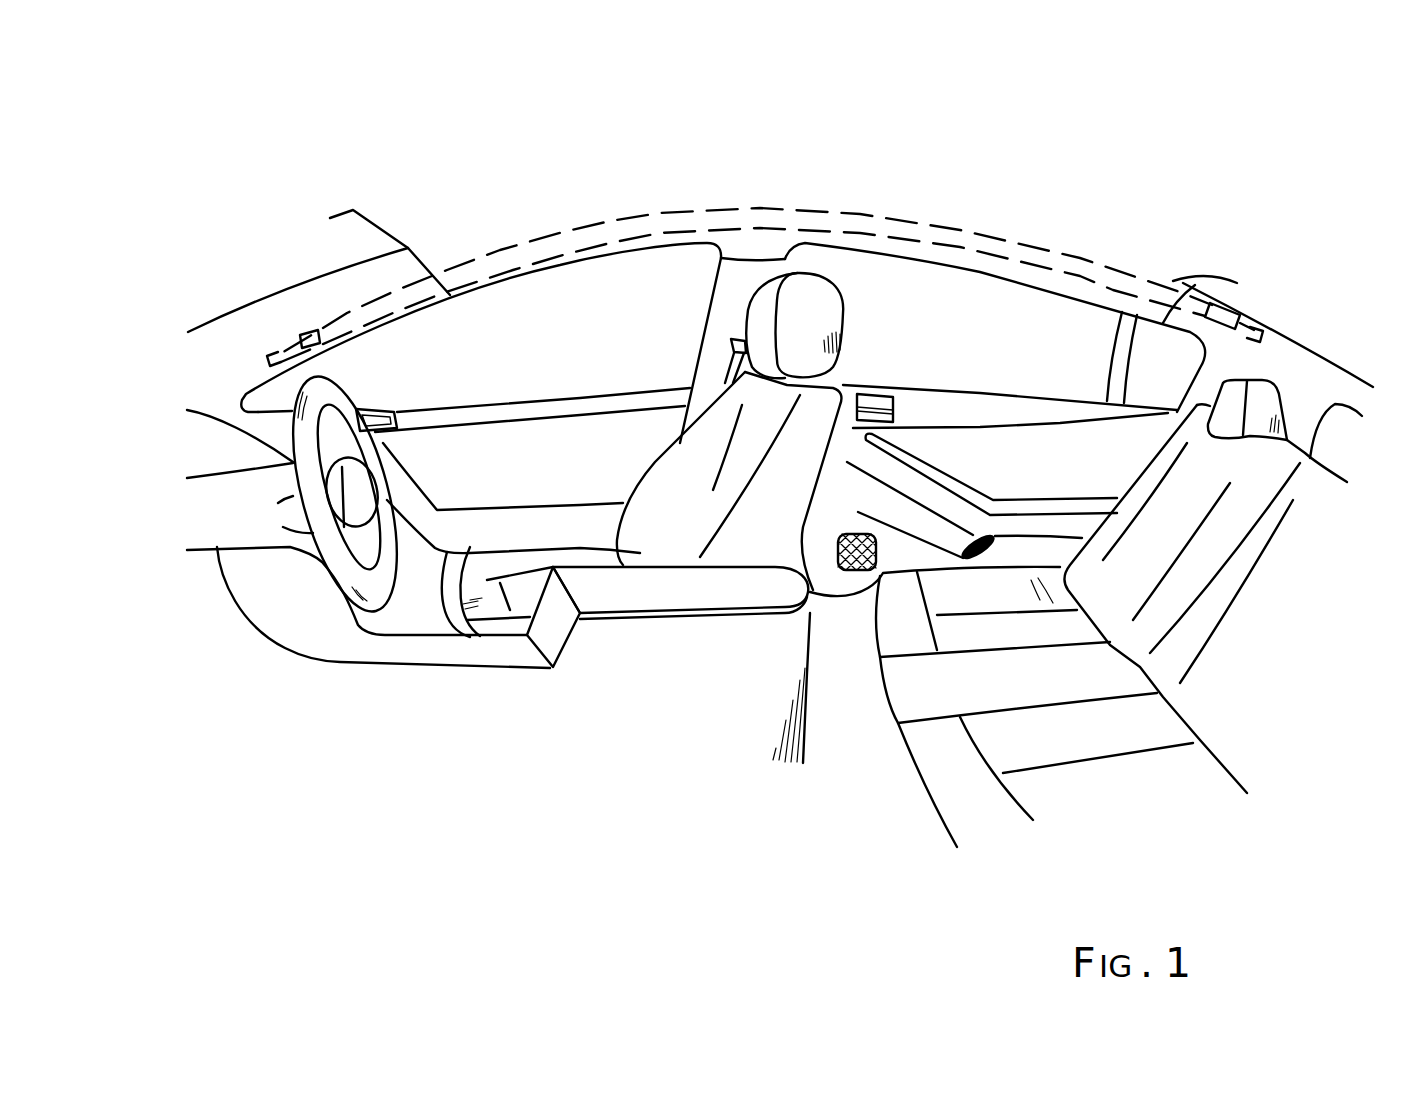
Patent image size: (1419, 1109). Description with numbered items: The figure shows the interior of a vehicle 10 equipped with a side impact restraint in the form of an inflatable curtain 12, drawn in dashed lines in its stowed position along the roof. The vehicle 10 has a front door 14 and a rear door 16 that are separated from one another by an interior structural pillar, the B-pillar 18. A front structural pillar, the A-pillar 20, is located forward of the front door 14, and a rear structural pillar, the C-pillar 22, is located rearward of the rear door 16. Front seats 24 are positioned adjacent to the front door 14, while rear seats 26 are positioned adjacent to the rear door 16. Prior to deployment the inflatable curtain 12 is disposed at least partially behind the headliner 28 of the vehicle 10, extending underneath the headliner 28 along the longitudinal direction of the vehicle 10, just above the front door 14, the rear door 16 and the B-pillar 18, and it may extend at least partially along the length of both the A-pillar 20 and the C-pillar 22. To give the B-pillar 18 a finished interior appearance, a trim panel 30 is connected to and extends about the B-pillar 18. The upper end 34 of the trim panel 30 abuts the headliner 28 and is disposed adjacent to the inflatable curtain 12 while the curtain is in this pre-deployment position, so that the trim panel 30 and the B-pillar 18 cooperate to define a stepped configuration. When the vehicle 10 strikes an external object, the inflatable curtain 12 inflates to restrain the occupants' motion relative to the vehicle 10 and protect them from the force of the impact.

The vehicle 10 is at (196, 158).
The inflatable curtain 12 is at (1110, 252).
The front door 14 is at (494, 400).
The rear door 16 is at (968, 392).
The B-pillar 18 is at (717, 298).
The A-pillar 20 is at (250, 302).
The C-pillar 22 is at (1308, 343).
The front seats 24 is at (648, 487).
The rear seats 26 is at (1128, 487).
The headliner 28 is at (904, 258).
The trim panel 30 is at (706, 363).
The upper end 34 is at (753, 258).